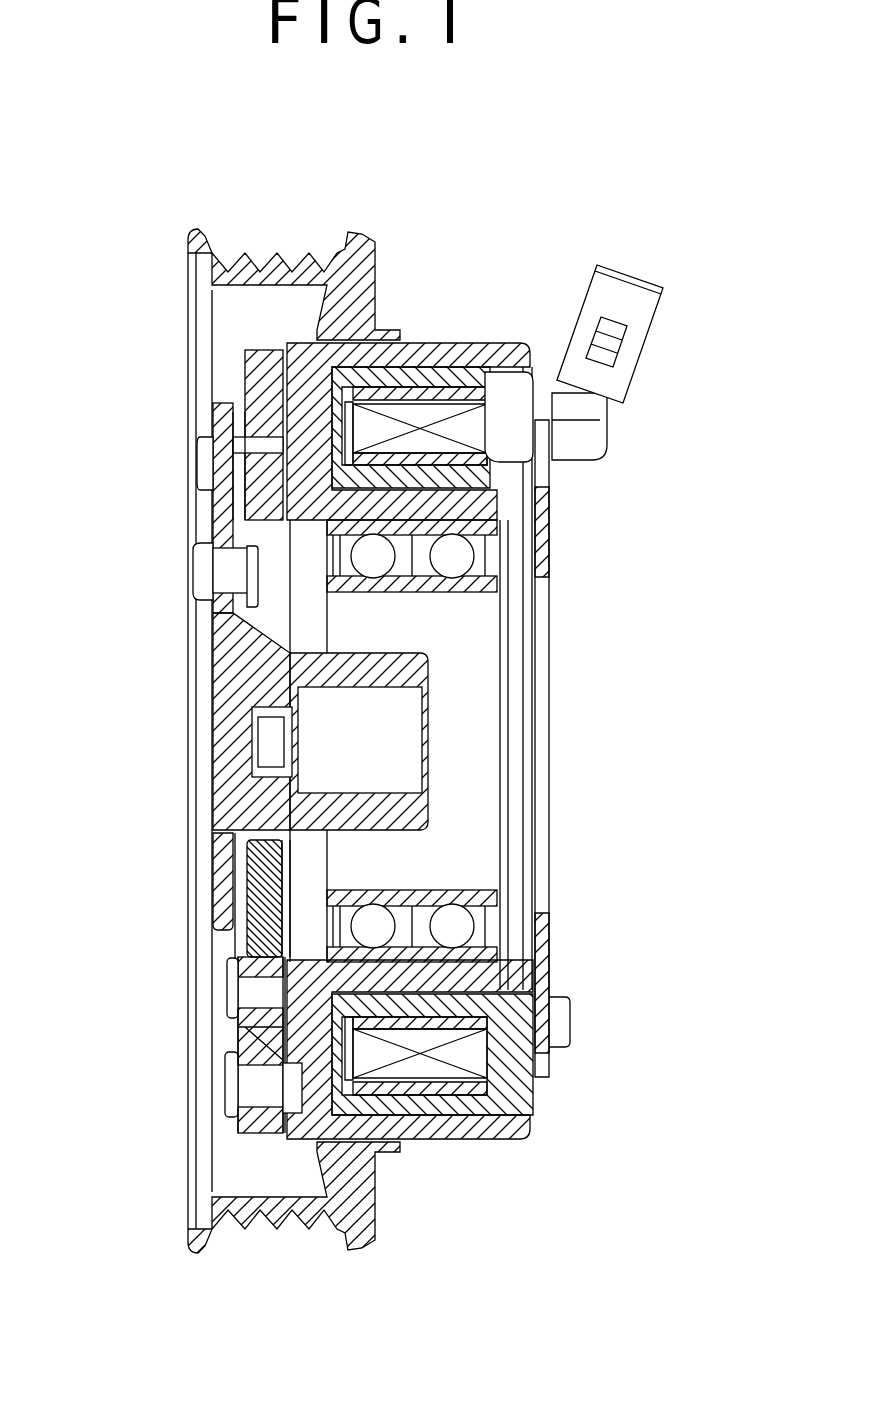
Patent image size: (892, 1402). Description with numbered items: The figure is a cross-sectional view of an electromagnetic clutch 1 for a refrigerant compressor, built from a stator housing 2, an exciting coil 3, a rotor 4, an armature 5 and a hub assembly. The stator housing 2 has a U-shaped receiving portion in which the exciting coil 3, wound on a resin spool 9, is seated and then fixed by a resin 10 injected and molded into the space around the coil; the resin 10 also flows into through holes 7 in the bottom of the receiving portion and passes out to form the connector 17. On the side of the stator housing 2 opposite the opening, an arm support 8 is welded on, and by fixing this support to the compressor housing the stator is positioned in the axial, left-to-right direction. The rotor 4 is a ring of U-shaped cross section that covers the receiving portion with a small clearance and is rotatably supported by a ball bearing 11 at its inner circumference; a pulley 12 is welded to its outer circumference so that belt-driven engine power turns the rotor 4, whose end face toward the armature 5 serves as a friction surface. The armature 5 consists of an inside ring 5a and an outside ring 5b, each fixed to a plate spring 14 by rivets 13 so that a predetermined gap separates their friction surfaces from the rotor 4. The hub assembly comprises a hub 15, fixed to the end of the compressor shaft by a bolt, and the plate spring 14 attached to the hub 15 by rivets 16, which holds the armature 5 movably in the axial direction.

The electromagnetic clutch 1 is at (163, 228).
The stator housing 2 is at (515, 1090).
The exciting coil 3 is at (420, 1045).
The rotor 4 is at (452, 343).
The armature 5 is at (240, 376).
The inside ring 5a is at (238, 1020).
The outside ring 5b is at (238, 1130).
The through holes 7 is at (550, 1056).
The arm support 8 is at (548, 958).
The spool 9 is at (515, 462).
The resin 10 is at (483, 1085).
The ball bearing 11 is at (500, 565).
The pulley 12 is at (194, 1254).
The rivets 13 is at (238, 975).
The plate spring 14 is at (257, 905).
The hub 15 is at (233, 840).
The rivets 16 is at (203, 559).
The connector 17 is at (640, 313).